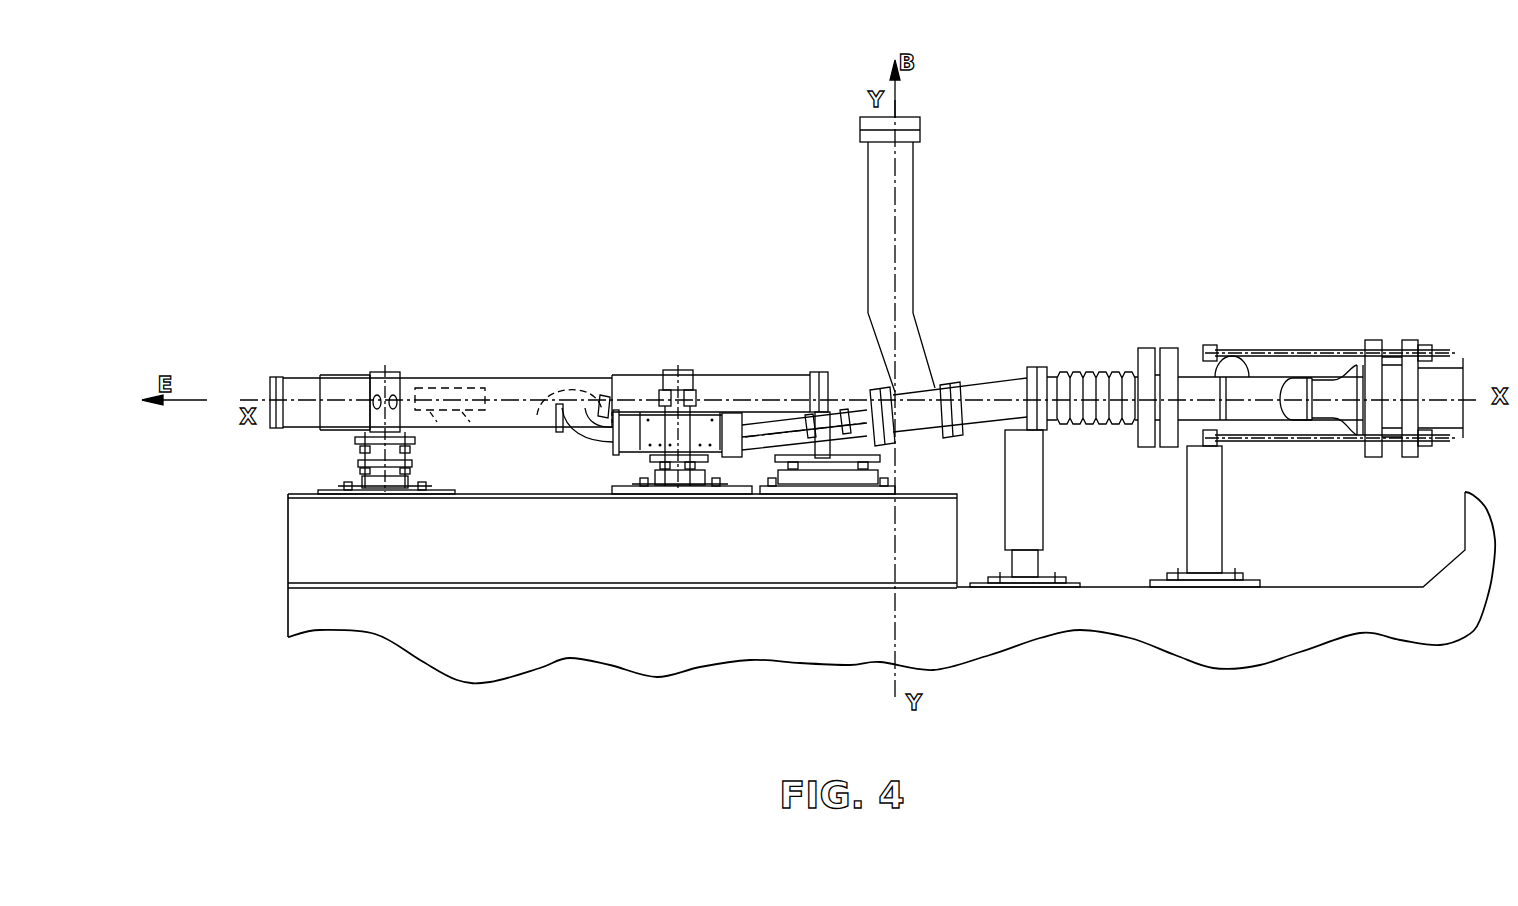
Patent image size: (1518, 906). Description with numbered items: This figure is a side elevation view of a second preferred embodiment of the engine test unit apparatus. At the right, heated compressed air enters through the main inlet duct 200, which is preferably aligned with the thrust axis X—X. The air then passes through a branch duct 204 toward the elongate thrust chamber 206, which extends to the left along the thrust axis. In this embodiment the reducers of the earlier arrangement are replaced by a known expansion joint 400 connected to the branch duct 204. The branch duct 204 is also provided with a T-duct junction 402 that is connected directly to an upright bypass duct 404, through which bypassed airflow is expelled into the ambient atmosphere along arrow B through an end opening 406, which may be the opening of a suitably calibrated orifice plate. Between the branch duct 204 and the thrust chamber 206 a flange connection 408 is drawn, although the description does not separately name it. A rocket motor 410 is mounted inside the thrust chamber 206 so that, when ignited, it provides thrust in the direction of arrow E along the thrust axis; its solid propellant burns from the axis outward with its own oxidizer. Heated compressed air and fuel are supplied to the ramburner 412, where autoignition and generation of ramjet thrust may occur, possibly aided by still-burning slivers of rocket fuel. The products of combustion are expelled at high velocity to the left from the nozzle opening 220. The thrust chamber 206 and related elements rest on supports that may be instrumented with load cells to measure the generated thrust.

The main inlet duct 200 is at (1448, 378).
The branch duct 204 is at (1006, 381).
The thrust chamber 206 is at (582, 376).
The nozzle opening 220 is at (267, 388).
The expansion joint 400 is at (1103, 384).
The T-duct junction 402 is at (920, 418).
The upright bypass duct 404 is at (880, 219).
The end opening 406 is at (903, 116).
The flange 408 is at (870, 388).
The rocket motor 410 is at (440, 387).
The ramburner 412 is at (550, 410).